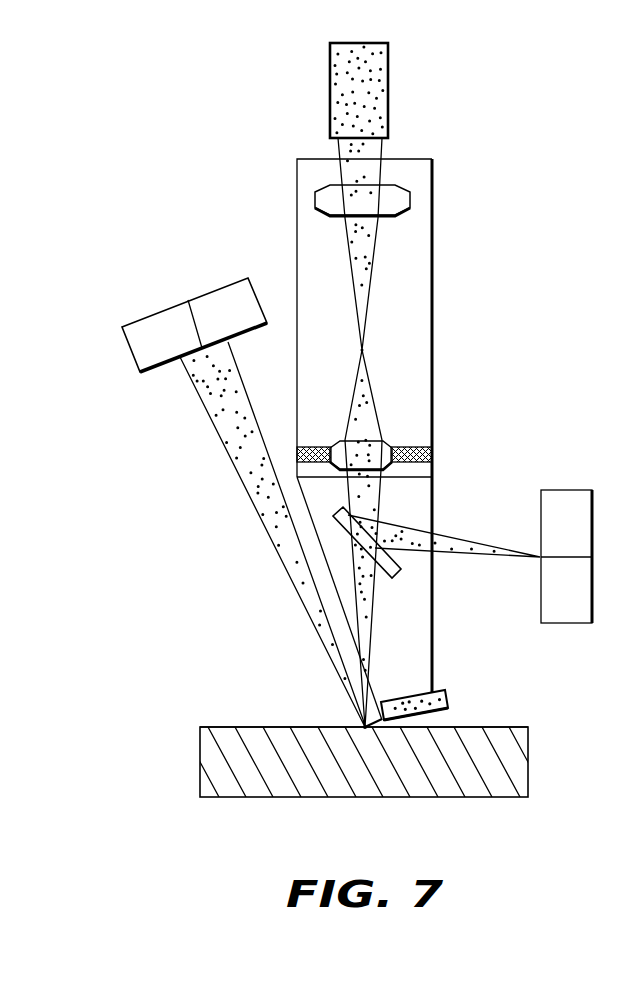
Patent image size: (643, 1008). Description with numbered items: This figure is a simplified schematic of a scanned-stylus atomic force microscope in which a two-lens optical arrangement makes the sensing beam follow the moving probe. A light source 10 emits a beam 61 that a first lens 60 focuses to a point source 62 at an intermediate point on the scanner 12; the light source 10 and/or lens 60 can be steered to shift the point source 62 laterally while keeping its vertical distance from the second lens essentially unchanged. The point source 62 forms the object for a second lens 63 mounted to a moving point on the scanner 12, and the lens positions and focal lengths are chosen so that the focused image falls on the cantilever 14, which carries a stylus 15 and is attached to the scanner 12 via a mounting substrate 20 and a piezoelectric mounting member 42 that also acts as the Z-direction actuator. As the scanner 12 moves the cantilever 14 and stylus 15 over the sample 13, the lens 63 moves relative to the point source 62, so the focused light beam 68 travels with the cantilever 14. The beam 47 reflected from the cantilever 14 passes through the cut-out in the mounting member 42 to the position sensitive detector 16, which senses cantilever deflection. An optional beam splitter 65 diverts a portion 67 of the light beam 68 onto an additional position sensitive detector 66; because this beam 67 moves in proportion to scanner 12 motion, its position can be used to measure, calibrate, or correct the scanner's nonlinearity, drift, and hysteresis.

The light source 10 is at (332, 97).
The scanner 12 is at (433, 193).
The sample 13 is at (200, 761).
The cantilever 14 is at (405, 721).
The stylus 15 is at (363, 724).
The position sensitive detector 16 is at (188, 300).
The mounting substrate 20 is at (440, 692).
The mounting member 42 is at (433, 503).
The reflected beam 47 is at (250, 503).
The first lens 60 is at (315, 200).
The beam 61 is at (376, 247).
The point source 62 is at (366, 354).
The second lens 63 is at (383, 443).
The beam splitter 65 is at (345, 507).
The additional position sensitive detector 66 is at (592, 533).
The portion of light beam 67 is at (470, 540).
The moving light beam 68 is at (357, 657).